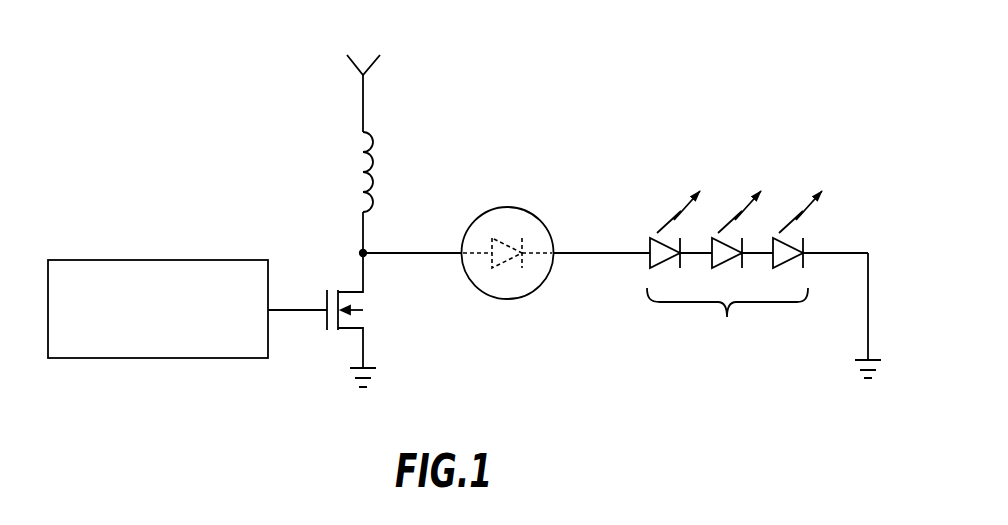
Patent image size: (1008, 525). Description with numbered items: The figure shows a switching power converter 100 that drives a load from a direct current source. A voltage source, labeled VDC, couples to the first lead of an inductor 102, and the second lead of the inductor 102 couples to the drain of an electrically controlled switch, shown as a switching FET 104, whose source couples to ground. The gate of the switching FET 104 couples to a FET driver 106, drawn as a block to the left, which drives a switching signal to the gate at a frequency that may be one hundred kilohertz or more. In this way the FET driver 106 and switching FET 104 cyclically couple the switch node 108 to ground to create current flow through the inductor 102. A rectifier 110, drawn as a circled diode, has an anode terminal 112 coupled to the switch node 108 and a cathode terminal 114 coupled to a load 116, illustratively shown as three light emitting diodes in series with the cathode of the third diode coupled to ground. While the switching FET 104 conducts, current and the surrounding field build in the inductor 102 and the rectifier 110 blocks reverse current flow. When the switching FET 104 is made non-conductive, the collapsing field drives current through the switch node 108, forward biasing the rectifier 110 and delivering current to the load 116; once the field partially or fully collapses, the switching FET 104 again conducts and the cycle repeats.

The switching power converter 100 is at (131, 61).
The inductor 102 is at (382, 153).
The switching FET 104 is at (330, 351).
The FET driver 106 is at (177, 358).
The switch node 108 is at (362, 253).
The rectifier 110 is at (525, 208).
The anode terminal 112 is at (462, 253).
The cathode terminal 114 is at (553, 253).
The load 116 is at (727, 317).